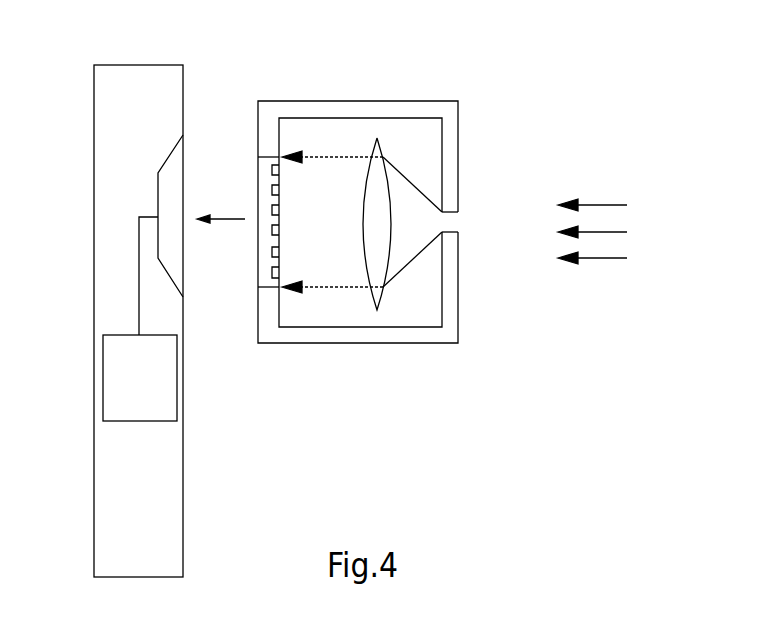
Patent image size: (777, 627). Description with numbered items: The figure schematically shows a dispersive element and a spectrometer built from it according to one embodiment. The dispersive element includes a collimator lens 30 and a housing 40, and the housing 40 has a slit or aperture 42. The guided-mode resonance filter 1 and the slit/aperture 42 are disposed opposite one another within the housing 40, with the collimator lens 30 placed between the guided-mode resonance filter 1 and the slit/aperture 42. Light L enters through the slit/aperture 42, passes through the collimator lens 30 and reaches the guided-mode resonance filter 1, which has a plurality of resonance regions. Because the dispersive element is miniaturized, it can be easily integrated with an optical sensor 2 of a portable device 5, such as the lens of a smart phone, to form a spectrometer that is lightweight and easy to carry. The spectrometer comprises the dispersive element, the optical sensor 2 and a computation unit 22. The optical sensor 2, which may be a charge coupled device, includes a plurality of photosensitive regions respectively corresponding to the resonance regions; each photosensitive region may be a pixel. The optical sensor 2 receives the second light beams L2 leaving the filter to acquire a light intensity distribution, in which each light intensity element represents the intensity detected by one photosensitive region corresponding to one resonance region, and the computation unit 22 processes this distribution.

The guided-mode resonance filter 1 is at (262, 260).
The optical sensor 2 is at (183, 155).
The portable device 5 is at (148, 65).
The computation unit 22 is at (115, 382).
The collimator lens 30 is at (377, 138).
The housing 40 is at (458, 101).
The slit/aperture 42 is at (452, 220).
The light L is at (607, 231).
The second light beam L2 is at (221, 202).